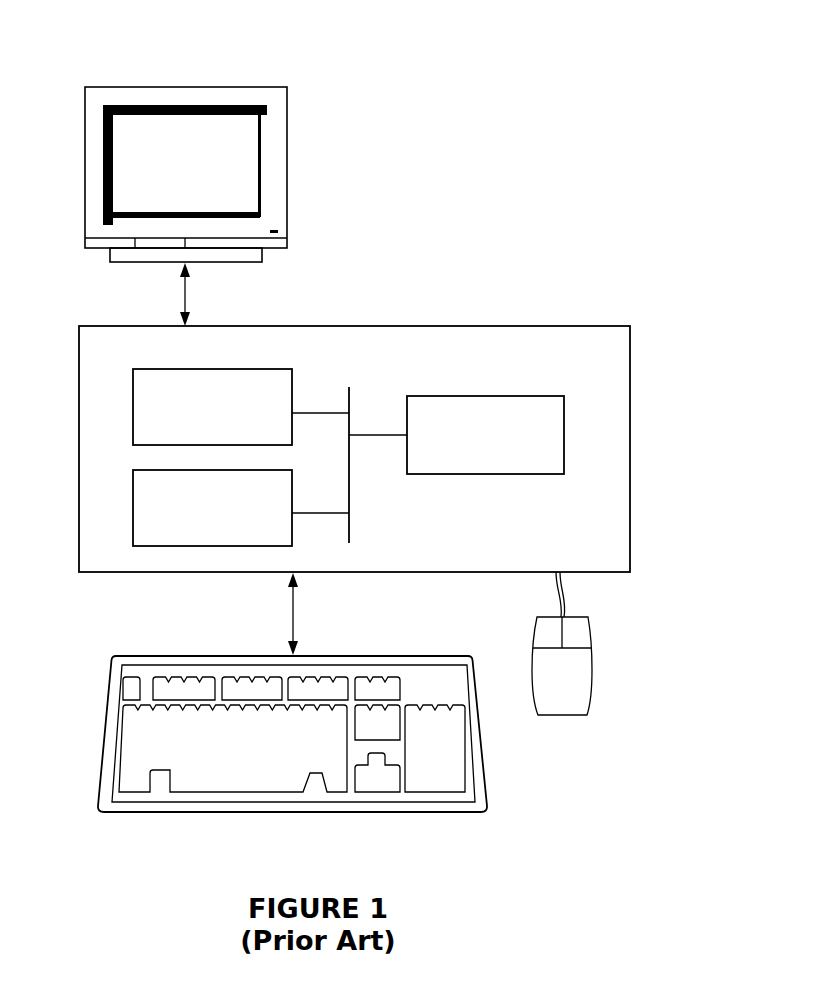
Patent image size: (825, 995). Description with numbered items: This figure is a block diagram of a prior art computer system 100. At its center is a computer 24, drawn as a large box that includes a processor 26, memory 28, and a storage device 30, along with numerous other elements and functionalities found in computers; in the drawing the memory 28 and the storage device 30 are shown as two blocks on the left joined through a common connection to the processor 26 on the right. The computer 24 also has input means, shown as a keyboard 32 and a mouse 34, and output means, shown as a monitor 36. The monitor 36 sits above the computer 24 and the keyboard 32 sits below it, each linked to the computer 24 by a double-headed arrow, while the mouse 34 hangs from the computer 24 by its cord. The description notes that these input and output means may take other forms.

The prior art computer system 100 is at (735, 117).
The computer 24 is at (393, 449).
The processor 26 is at (473, 445).
The memory 28 is at (200, 417).
The storage device 30 is at (200, 519).
The keyboard 32 is at (234, 755).
The mouse 34 is at (552, 685).
The monitor 36 is at (174, 176).